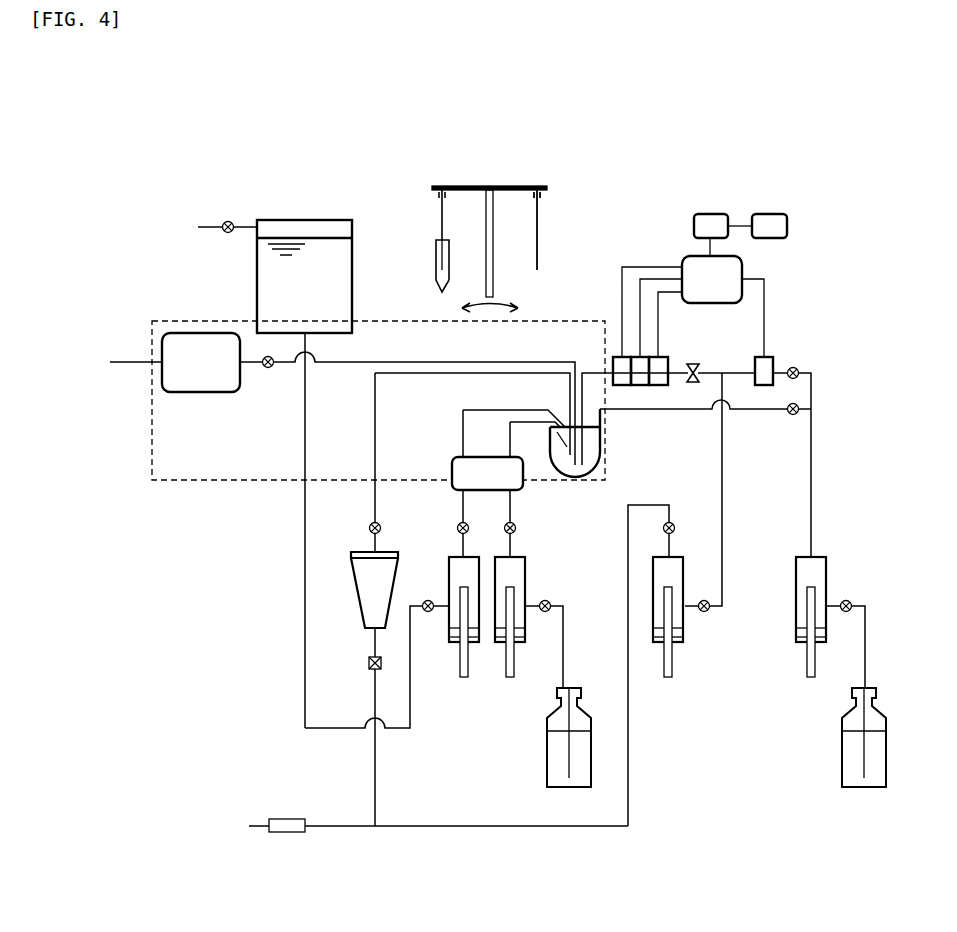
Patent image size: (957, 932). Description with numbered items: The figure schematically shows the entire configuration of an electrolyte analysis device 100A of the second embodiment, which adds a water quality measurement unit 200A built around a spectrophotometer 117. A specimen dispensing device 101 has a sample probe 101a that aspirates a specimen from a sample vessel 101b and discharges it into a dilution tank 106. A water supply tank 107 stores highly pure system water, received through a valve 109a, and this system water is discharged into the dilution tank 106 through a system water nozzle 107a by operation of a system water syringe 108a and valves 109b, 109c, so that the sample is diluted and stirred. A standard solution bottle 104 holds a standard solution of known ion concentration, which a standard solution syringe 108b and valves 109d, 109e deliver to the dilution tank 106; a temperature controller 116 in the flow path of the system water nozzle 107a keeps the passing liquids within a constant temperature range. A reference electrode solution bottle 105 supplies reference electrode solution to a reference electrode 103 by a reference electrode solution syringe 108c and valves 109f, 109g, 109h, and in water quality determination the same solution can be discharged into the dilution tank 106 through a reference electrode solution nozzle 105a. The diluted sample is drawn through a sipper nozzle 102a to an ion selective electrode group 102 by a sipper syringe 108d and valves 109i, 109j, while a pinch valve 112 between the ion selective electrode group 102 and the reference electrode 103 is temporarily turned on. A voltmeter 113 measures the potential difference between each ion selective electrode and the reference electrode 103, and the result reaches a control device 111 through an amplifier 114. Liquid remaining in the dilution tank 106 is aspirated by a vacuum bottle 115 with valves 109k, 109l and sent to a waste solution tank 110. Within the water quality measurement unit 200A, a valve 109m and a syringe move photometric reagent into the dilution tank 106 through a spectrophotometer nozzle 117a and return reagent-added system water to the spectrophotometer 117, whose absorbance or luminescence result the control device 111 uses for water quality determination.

The electrolyte analysis device 100A is at (404, 98).
The water quality measurement unit 200A is at (170, 321).
The specimen dispensing device 101 is at (488, 179).
The sample probe 101a is at (540, 226).
The sample vessel 101b is at (436, 262).
The ion selective electrode group 102 is at (612, 356).
The sipper nozzle 102a is at (586, 372).
The reference electrode 103 is at (765, 357).
The standard solution bottle 104 is at (546, 780).
The reference electrode solution bottle 105 is at (840, 745).
The reference electrode solution nozzle 105a is at (430, 373).
The dilution tank 106 is at (604, 456).
The water supply tank 107 is at (311, 220).
The system water nozzle 107a is at (463, 434).
The system water syringe 108a is at (472, 642).
The standard solution syringe 108b is at (521, 641).
The reference electrode solution syringe 108c is at (796, 578).
The sipper syringe 108d is at (683, 645).
The valve 109a is at (228, 221).
The valve 109b is at (428, 613).
The valve 109c is at (458, 526).
The valve 109d is at (548, 600).
The valve 109e is at (516, 528).
The valve 109f is at (848, 600).
The valve 109g is at (797, 369).
The valve 109h is at (794, 414).
The valve 109i is at (708, 612).
The valve 109j is at (697, 516).
The valve 109k is at (370, 528).
The valve 109l is at (366, 663).
The valve 109m is at (268, 381).
The waste solution tank 110 is at (285, 833).
The control device 111 is at (770, 214).
The pinch valve 112 is at (695, 362).
The voltmeter 113 is at (684, 256).
The amplifier 114 is at (710, 214).
The vacuum bottle 115 is at (393, 592).
The temperature controller 116 is at (452, 473).
The spectrophotometer 117 is at (205, 392).
The spectrophotometer nozzle 117a is at (541, 365).